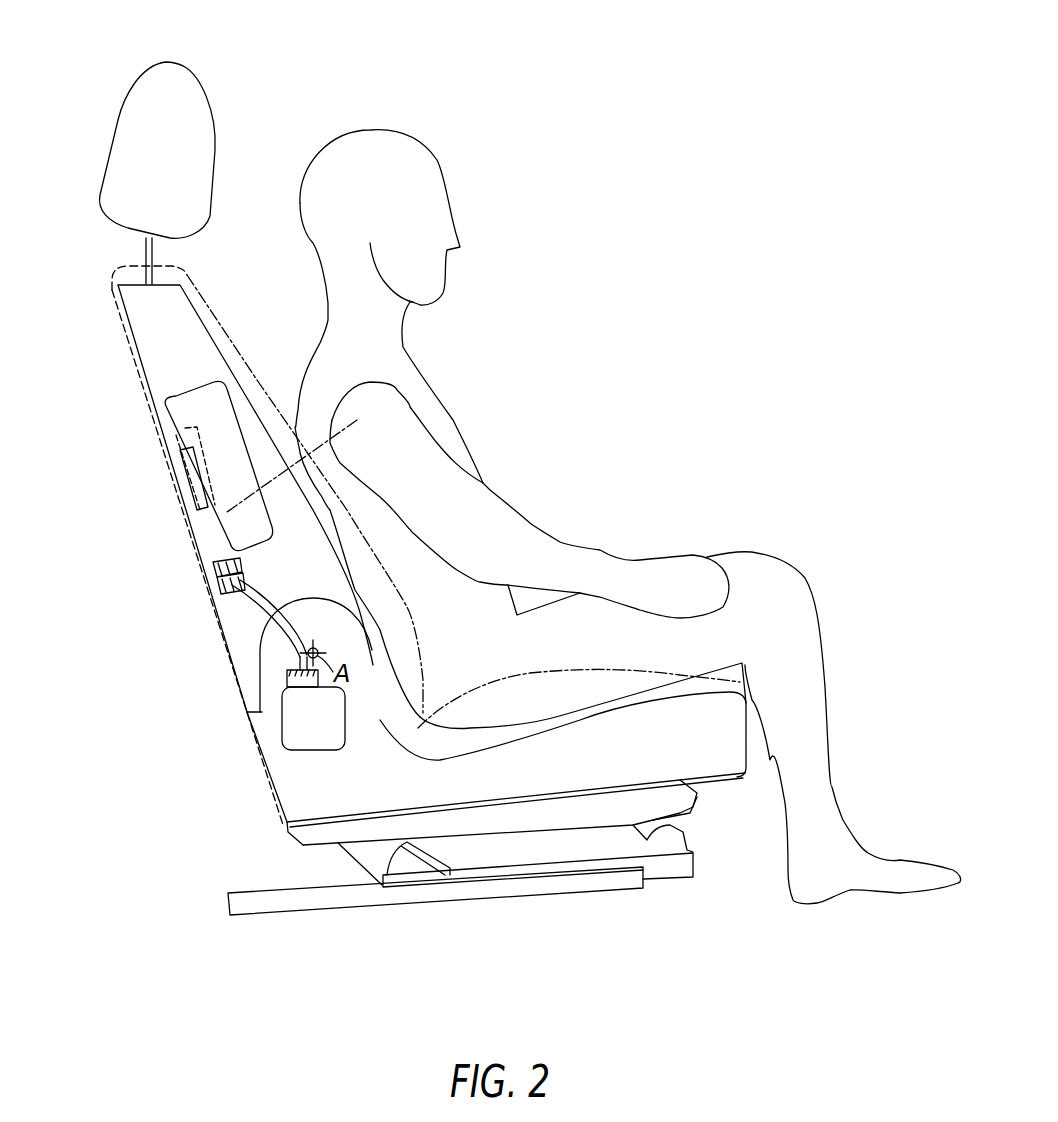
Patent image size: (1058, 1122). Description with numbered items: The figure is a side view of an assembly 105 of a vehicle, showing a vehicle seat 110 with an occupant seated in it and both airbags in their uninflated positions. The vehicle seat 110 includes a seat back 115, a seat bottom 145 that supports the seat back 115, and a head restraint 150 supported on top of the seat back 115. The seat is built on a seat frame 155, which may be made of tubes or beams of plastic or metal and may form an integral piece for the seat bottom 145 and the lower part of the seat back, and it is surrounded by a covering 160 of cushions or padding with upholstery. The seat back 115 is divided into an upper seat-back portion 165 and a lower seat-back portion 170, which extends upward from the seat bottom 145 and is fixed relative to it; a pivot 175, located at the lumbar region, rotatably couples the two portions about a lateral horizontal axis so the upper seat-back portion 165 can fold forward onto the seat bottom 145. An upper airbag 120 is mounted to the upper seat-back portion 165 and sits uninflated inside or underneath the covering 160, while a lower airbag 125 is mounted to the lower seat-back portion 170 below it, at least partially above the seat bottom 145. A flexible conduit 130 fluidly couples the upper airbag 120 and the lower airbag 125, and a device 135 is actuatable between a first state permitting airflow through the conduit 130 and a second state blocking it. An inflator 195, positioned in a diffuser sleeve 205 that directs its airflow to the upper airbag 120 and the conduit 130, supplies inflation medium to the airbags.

The assembly 105 is at (170, 826).
The vehicle seat 110 is at (650, 126).
The seat back 115 is at (112, 313).
The upper airbag 120 is at (203, 385).
The lower airbag 125 is at (283, 727).
The flexible conduit 130 is at (237, 607).
The device 135 is at (213, 583).
The seat bottom 145 is at (720, 760).
The head restraint 150 is at (183, 66).
The seat frame 155 is at (273, 804).
The covering 160 is at (258, 387).
The upper seat-back portion 165 is at (147, 384).
The lower seat-back portion 170 is at (262, 680).
The pivot 175 is at (313, 653).
The inflator 195 is at (190, 468).
The diffuser sleeve 205 is at (357, 420).